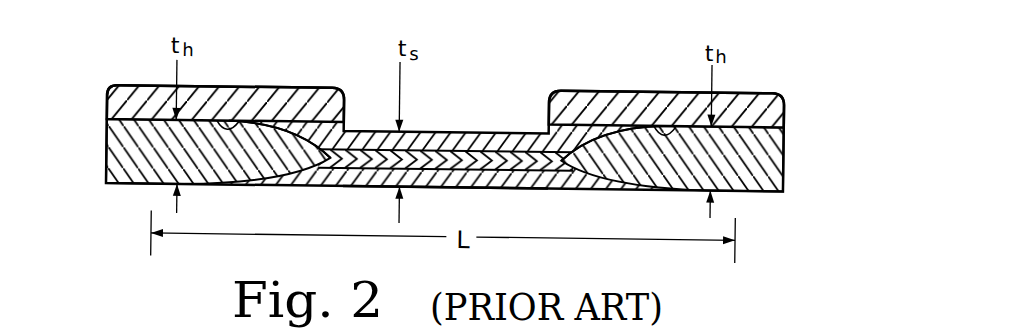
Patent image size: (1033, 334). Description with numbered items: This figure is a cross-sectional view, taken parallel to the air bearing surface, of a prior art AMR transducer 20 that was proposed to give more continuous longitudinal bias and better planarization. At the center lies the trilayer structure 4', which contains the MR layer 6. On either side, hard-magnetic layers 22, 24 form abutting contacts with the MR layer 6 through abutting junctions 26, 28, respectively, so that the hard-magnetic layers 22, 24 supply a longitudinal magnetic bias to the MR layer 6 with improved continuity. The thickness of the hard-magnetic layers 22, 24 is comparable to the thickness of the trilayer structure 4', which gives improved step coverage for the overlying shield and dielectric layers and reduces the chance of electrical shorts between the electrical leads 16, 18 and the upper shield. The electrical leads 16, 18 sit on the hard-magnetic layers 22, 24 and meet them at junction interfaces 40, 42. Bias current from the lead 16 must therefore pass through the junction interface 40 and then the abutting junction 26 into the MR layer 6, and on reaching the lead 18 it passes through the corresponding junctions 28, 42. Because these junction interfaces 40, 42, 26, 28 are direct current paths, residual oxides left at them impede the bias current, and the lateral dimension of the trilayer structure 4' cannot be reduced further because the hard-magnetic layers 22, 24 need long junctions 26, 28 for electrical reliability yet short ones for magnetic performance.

The transducer 20 is at (770, 52).
The electrical lead 16 is at (136, 107).
The electrical lead 18 is at (767, 102).
The hard-magnetic layer 22 is at (125, 151).
The hard-magnetic layer 24 is at (763, 151).
The MR layer 6 is at (470, 138).
The abutting junction 26 is at (279, 122).
The abutting junction 28 is at (611, 122).
The junction interface 40 is at (236, 119).
The junction interface 42 is at (655, 121).
The trilayer structure 4' is at (445, 209).